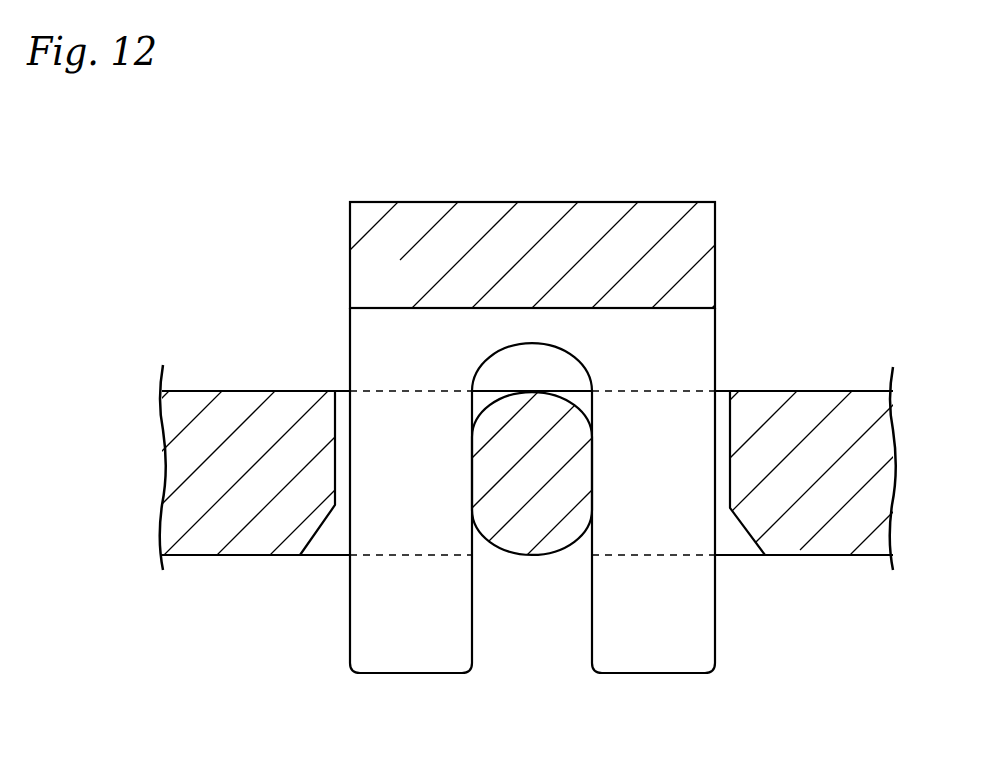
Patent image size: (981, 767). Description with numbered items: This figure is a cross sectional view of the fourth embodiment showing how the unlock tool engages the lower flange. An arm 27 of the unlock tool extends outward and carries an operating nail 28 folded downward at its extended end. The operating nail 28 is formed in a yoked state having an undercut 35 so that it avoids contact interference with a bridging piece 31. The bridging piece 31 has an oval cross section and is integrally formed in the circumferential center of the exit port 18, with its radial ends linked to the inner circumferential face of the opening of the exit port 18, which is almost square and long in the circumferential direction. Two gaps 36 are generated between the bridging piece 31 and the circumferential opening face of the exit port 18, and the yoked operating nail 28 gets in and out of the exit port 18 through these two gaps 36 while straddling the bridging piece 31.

The arm 27 is at (698, 240).
The operating nail 28 is at (368, 613).
The bridging piece 31 is at (528, 530).
The undercut 35 is at (590, 598).
The gap 36 is at (335, 428).
The exit port 18 is at (732, 538).